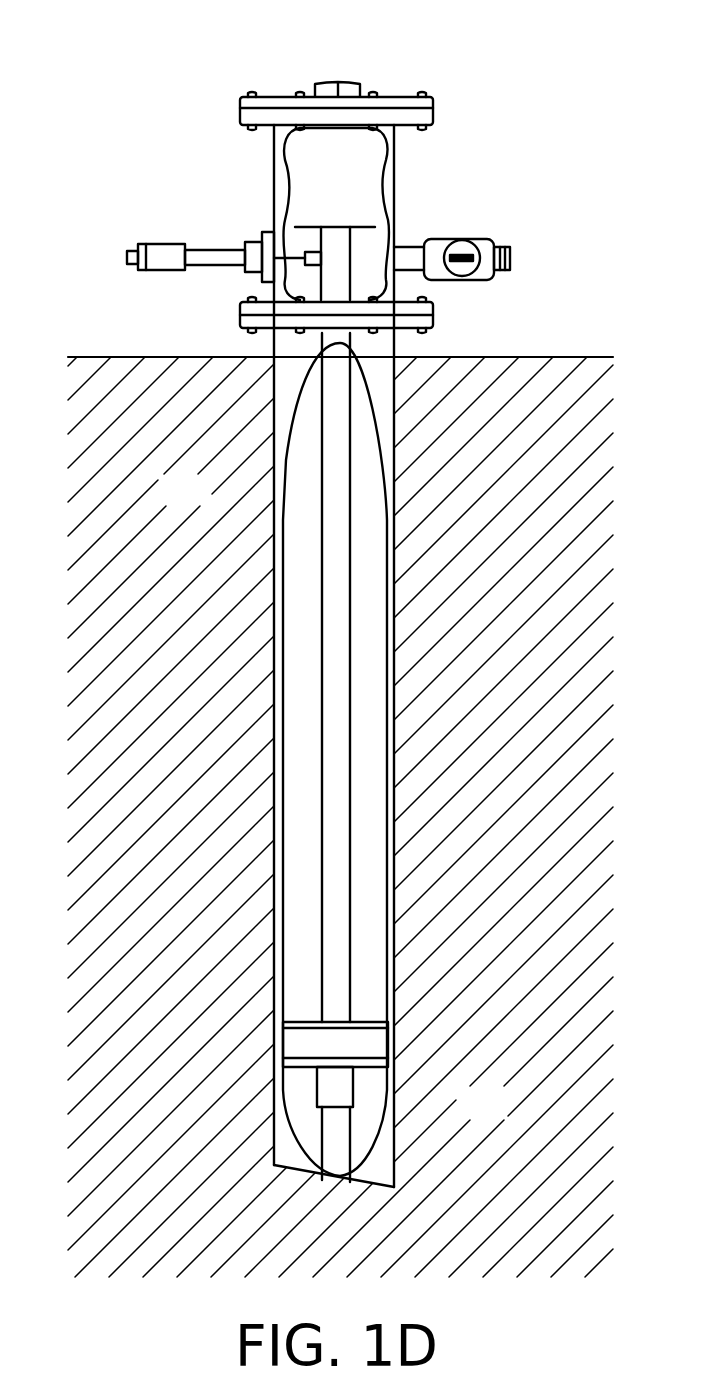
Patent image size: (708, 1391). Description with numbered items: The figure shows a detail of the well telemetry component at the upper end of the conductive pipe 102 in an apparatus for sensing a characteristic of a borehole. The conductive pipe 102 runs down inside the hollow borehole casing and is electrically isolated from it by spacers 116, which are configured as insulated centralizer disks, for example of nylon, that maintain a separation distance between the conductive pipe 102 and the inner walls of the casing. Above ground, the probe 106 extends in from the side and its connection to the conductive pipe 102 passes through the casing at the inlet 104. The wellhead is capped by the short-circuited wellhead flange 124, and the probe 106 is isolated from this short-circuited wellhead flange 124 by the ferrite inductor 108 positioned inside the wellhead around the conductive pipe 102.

The conductive pipe 102 is at (322, 493).
The inlet 104 is at (518, 90).
The probe 106 is at (98, 257).
The ferrite inductor 108 is at (306, 177).
The spacers 116 is at (366, 1045).
The wellhead flange 124 is at (368, 74).